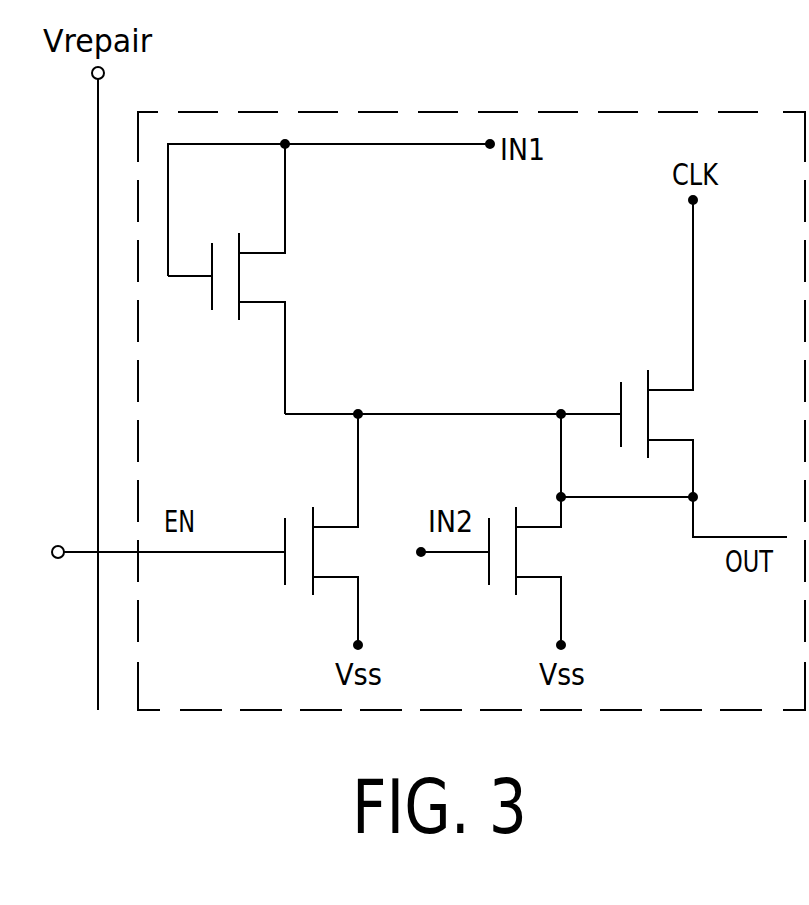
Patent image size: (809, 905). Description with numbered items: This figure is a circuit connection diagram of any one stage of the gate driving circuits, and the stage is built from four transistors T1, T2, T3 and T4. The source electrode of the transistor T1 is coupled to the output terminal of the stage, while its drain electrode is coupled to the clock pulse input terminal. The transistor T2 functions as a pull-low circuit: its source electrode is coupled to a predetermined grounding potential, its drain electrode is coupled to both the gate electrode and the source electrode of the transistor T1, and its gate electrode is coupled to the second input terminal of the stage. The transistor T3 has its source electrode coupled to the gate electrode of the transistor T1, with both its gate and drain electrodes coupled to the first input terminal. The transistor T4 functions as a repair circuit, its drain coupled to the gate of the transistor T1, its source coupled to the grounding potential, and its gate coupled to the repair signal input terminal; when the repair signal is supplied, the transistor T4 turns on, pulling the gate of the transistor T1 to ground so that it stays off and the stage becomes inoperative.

The transistor T1 is at (704, 368).
The transistor T2 is at (533, 529).
The transistor T3 is at (234, 279).
The transistor T4 is at (328, 529).